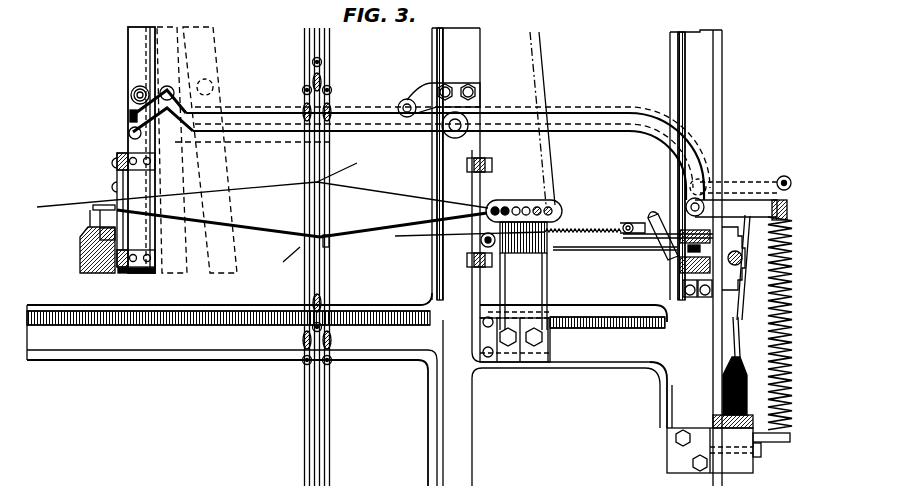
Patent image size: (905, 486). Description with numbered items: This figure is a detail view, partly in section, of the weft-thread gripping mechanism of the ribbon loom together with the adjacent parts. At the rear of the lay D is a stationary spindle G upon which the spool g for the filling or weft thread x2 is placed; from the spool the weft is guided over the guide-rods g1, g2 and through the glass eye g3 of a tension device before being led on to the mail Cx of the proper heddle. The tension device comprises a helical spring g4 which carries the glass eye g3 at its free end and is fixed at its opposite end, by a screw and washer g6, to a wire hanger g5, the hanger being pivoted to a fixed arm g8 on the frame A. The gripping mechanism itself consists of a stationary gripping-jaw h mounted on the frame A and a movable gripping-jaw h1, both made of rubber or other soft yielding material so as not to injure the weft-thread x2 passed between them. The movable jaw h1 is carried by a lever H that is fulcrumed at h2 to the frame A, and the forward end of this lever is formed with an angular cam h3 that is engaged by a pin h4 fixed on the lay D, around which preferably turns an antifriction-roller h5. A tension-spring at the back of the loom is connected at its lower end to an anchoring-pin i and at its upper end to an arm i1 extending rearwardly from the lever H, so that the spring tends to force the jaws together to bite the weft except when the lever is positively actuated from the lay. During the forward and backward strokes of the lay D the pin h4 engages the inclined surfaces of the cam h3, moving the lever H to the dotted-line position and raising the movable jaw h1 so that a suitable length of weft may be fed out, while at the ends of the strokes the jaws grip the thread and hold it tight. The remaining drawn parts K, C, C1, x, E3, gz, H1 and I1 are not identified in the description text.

The lay D is at (125, 150).
The antifriction-roller h5 is at (137, 86).
The pin h4 is at (130, 98).
The angular cam h3 is at (180, 97).
The clamp block K is at (97, 205).
The lever H is at (602, 120).
The fulcrum h2 is at (457, 117).
The frame A is at (432, 403).
The rods C is at (306, 257).
The rod connection C1 is at (321, 221).
The mail Cx is at (340, 248).
The wire x is at (296, 120).
The weft-thread x2 is at (768, 292).
The contact plate E3 is at (516, 210).
The guide-rod g2 is at (492, 243).
The glass eye g3 is at (549, 231).
The helical spring g4 is at (628, 223).
The wire hanger g5 is at (623, 238).
The screw and washer g6 is at (640, 251).
The fixed arm g8 is at (670, 245).
The lever gz is at (653, 212).
The stationary gripping-jaw h is at (667, 268).
The right post H1 is at (654, 258).
The movable gripping-jaw h1 is at (723, 203).
The arm i1 is at (748, 210).
The guide-rod g1 is at (742, 258).
The stationary spindle G is at (733, 325).
The lever I1 is at (742, 346).
The spool g is at (717, 410).
The anchoring-pin i is at (787, 438).